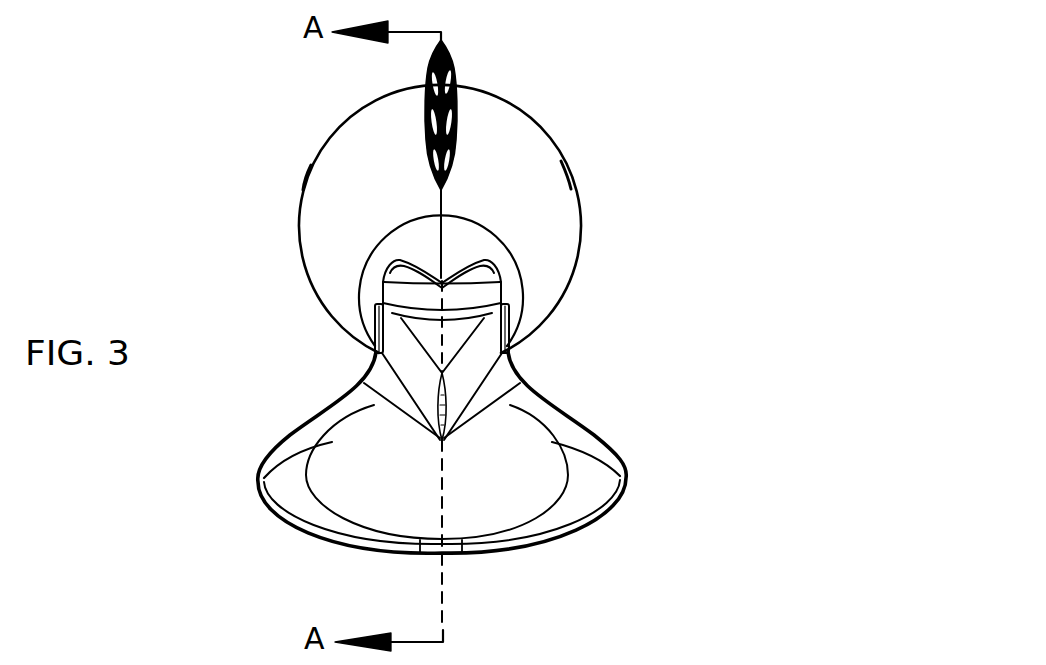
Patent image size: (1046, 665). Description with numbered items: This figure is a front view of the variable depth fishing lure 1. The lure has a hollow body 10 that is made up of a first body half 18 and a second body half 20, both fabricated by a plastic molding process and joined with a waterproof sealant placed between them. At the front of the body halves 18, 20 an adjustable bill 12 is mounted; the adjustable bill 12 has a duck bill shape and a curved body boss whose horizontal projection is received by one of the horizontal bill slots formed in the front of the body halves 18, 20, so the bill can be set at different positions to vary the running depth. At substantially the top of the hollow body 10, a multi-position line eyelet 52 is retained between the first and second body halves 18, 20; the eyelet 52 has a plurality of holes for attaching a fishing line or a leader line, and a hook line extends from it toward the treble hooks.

The variable depth fishing lure 1 is at (672, 216).
The hollow body 10 is at (585, 273).
The adjustable bill 12 is at (600, 430).
The first body half 18 is at (305, 190).
The second body half 20 is at (550, 137).
The multi-position line eyelet 52 is at (449, 81).